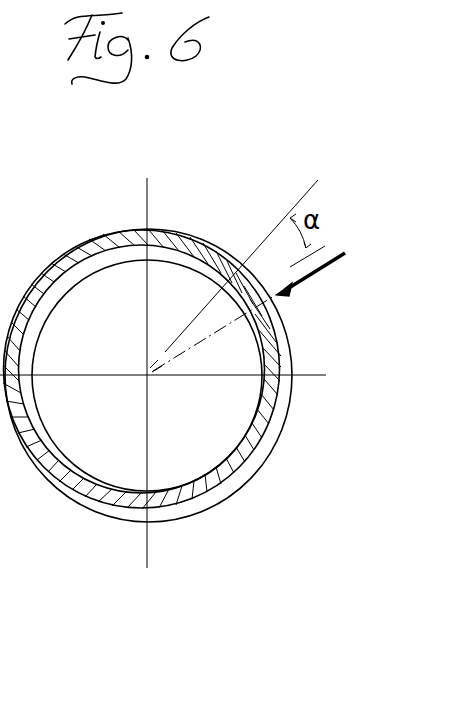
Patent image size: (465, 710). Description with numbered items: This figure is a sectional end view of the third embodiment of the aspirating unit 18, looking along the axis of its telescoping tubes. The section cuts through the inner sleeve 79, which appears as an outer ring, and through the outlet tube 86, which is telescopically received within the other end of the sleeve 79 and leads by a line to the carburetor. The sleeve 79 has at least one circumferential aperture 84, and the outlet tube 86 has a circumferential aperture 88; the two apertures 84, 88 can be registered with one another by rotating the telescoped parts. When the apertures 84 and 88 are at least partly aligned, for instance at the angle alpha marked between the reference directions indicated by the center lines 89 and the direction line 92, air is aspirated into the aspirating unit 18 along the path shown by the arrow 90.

The aspirating unit 18 is at (268, 520).
The inner sleeve 79 is at (192, 508).
The circumferential aperture 84 is at (244, 263).
The outlet tube 86 is at (98, 492).
The circumferential aperture 88 is at (280, 338).
The center lines 89 is at (318, 427).
The arrow 90 is at (291, 290).
The reference direction line 92 is at (322, 245).